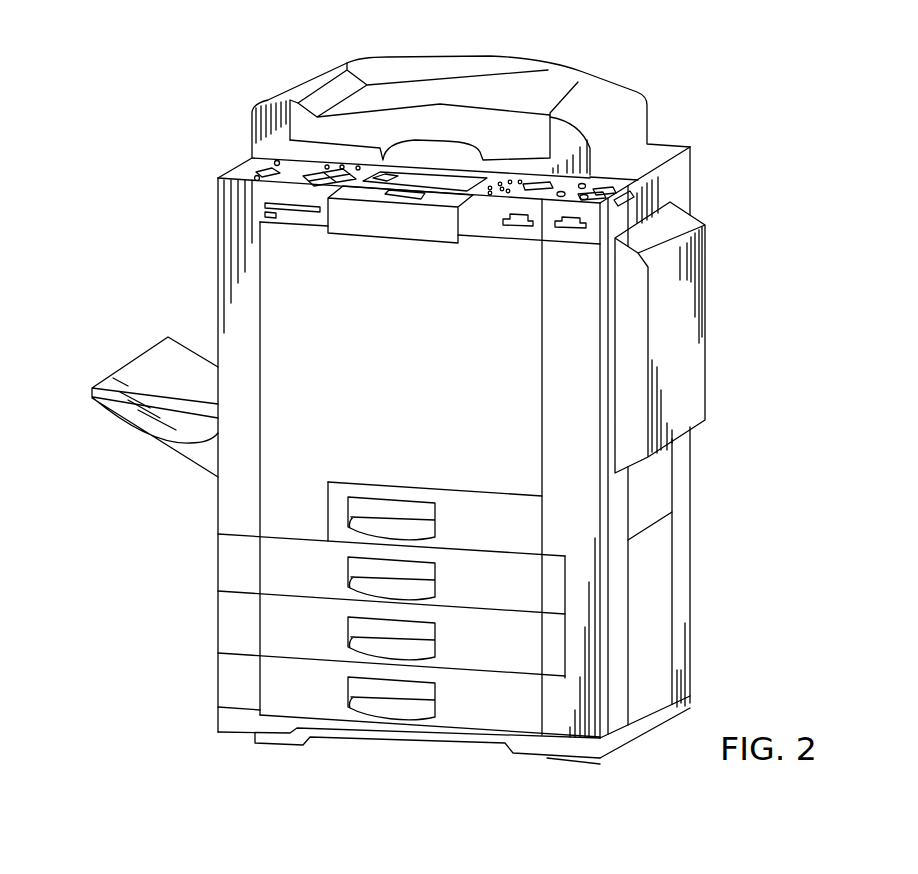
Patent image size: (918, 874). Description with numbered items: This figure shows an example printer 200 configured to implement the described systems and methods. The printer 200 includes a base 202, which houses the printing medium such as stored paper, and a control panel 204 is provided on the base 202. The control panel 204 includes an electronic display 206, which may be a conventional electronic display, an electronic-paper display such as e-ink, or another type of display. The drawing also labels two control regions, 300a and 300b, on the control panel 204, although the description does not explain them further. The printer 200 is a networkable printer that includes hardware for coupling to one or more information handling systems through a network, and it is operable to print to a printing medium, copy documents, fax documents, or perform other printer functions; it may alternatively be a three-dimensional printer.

The printer 200 is at (164, 127).
The base 202 is at (413, 374).
The control panel 204 is at (357, 217).
The electronic display 206 is at (457, 182).
The user interface control module 300a is at (390, 178).
The secondary control buttons 300b is at (518, 190).